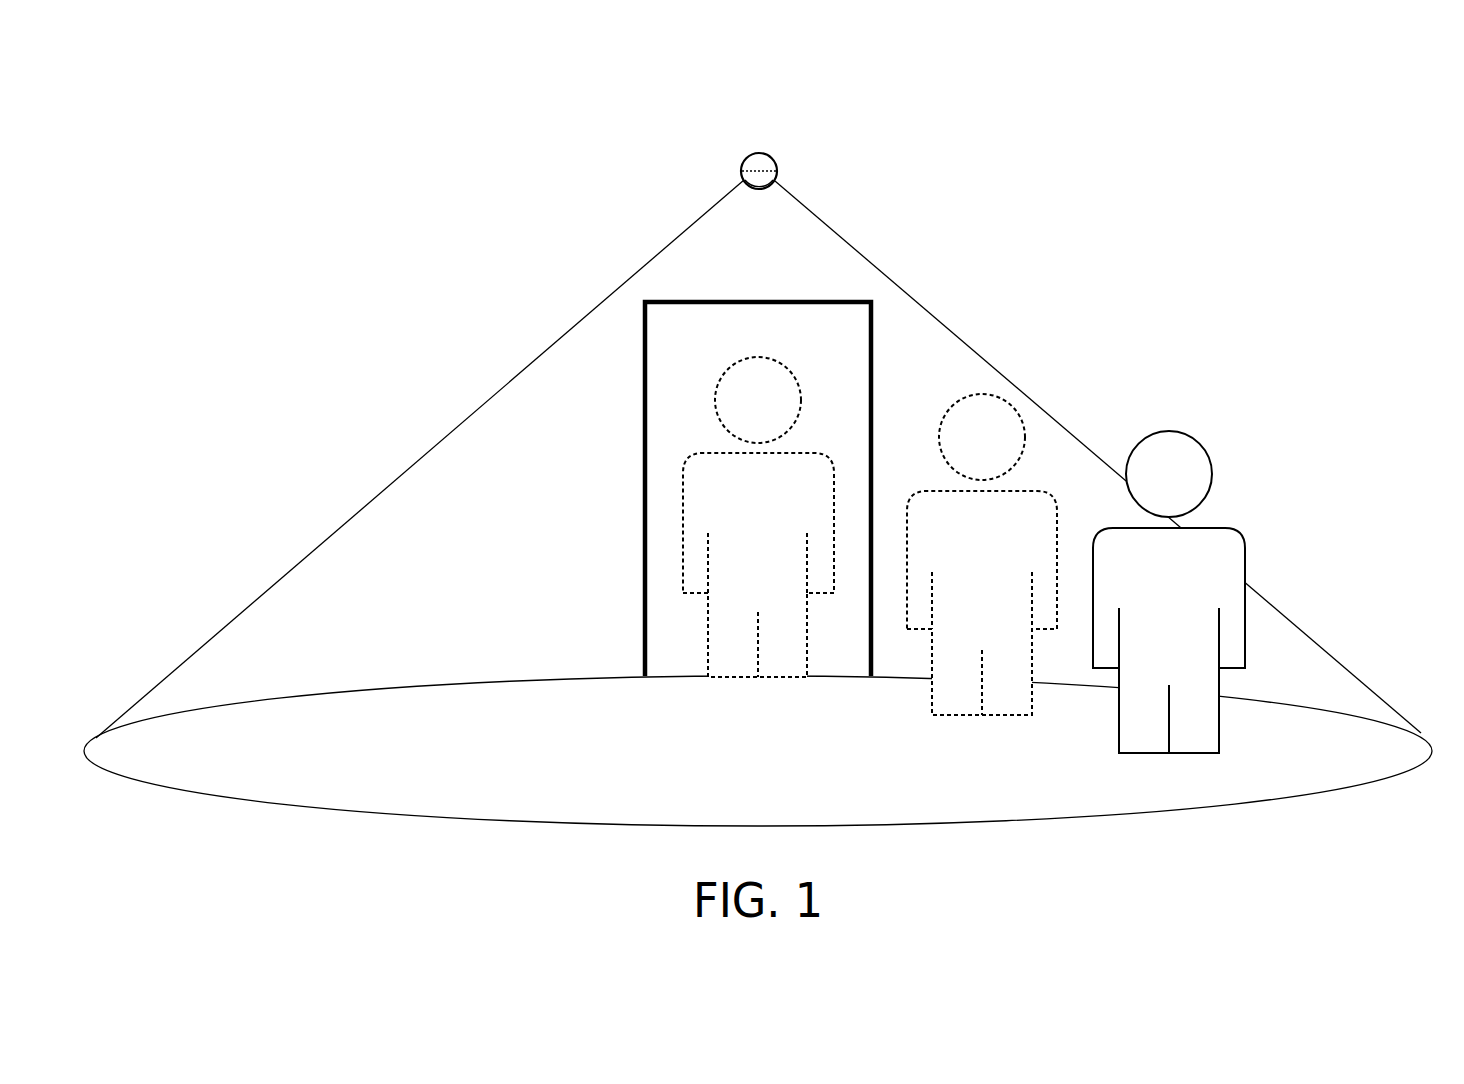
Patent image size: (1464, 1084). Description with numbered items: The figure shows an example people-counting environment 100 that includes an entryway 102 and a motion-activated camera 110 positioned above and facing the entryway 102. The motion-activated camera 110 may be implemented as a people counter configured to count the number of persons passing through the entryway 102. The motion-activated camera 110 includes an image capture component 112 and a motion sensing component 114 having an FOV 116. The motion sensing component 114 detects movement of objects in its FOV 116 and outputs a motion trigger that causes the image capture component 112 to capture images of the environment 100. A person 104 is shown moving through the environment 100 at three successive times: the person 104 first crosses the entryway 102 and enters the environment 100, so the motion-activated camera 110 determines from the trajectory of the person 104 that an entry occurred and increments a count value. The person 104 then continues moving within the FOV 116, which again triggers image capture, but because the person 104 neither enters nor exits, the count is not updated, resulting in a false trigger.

The people-counting environment 100 is at (1341, 98).
The entryway 102 is at (758, 299).
The person 104 is at (782, 362).
The motion-activated camera 110 is at (759, 146).
The image capture component 112 is at (773, 162).
The motion sensing component 114 is at (757, 186).
The FOV 116 is at (751, 825).